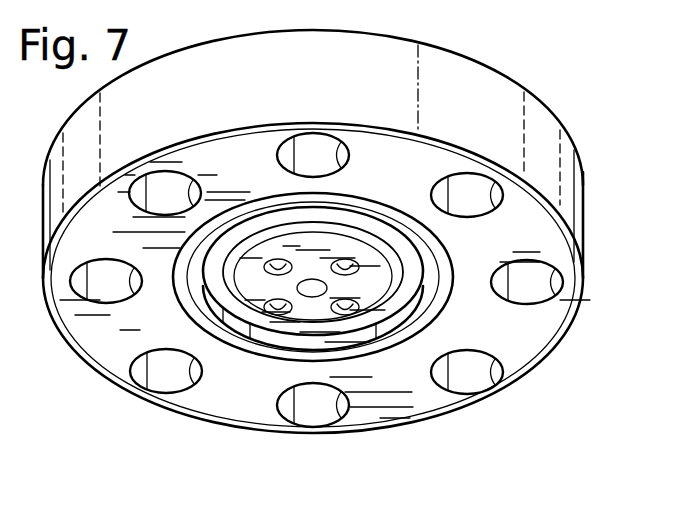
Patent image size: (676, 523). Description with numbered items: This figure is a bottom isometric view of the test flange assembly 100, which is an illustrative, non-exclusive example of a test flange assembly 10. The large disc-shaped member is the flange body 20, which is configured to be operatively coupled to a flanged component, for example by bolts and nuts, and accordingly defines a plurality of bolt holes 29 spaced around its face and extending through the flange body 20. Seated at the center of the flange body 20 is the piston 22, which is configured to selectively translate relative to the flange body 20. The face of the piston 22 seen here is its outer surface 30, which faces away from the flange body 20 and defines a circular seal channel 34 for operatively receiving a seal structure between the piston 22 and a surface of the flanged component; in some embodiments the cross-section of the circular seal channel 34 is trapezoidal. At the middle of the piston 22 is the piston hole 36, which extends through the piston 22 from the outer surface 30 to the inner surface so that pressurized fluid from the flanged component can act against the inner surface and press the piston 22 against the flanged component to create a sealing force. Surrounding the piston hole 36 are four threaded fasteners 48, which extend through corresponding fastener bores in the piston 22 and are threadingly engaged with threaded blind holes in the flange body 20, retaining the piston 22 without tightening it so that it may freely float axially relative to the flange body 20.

The test flange assembly 10 is at (611, 53).
The test flange assembly 100 is at (543, 79).
The flange body 20 is at (584, 219).
The piston 22 is at (451, 259).
The bolt holes 29 is at (96, 229).
The outer surface 30 is at (246, 298).
The circular seal channel 34 is at (218, 283).
The piston hole 36 is at (328, 289).
The threaded fasteners 48 is at (342, 265).